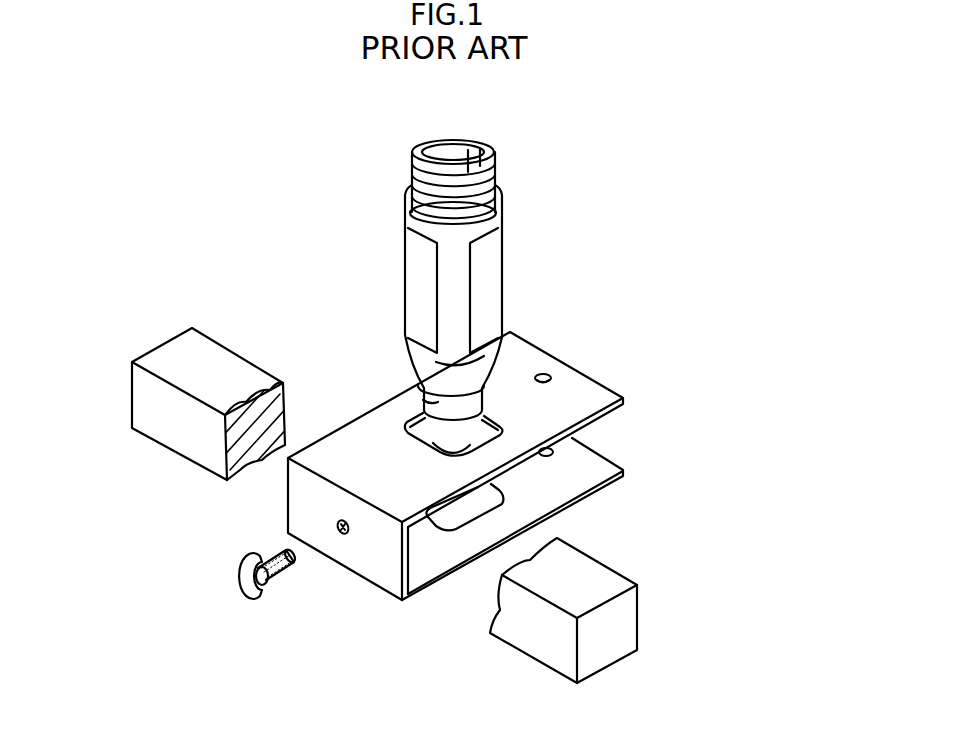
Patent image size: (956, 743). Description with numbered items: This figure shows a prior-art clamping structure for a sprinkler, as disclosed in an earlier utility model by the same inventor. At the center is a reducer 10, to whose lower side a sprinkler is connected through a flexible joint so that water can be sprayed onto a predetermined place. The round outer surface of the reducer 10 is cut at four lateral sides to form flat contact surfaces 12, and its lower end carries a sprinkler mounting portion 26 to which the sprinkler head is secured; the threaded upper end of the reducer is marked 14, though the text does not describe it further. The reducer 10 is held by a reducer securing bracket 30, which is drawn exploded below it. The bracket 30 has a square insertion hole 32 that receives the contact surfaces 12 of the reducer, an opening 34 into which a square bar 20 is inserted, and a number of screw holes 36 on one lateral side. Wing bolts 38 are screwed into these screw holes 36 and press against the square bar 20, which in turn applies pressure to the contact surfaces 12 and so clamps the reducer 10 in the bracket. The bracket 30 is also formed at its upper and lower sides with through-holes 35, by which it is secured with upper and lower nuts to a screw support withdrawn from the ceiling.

The reducer 10 is at (454, 280).
The contact surfaces 12 is at (490, 250).
The threaded neck 14 is at (493, 188).
The square bar 20 is at (590, 573).
The sprinkler mounting portion 26 is at (420, 388).
The reducer securing bracket 30 is at (537, 356).
The square insertion hole 32 is at (500, 434).
The opening 34 is at (422, 545).
The through-holes 35 is at (547, 450).
The screw holes 36 is at (340, 535).
The wing bolts 38 is at (245, 575).